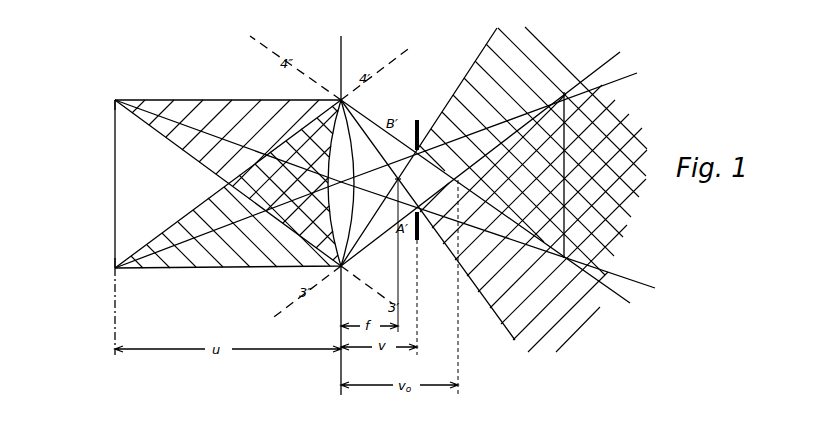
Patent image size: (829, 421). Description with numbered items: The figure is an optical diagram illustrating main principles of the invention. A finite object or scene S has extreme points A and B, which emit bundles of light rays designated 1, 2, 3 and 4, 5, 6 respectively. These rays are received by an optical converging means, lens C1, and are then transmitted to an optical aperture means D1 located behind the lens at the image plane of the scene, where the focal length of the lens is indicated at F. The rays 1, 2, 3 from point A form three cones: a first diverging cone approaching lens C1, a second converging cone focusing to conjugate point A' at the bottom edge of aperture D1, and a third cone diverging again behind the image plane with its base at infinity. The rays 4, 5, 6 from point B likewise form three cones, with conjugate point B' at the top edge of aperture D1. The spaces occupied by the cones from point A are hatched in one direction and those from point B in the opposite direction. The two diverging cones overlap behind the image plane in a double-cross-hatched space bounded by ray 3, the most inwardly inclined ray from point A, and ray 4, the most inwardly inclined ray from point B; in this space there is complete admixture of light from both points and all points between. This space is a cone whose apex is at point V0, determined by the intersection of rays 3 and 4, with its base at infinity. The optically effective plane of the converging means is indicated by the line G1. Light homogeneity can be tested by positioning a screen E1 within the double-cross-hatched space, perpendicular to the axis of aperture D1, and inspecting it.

The light ray 1 is at (318, 225).
The light ray 2 is at (390, 200).
The light ray 3 is at (370, 154).
The light ray 4 is at (376, 210).
The light ray 5 is at (381, 165).
The light ray 6 is at (310, 144).
The finite object or scene S is at (101, 184).
The extreme point A is at (103, 98).
The extreme point B is at (101, 271).
The lens C1 is at (347, 127).
The optical aperture means D1 is at (418, 120).
The screen E1 is at (564, 172).
The optically effective plane G1 is at (346, 50).
The focal length F is at (399, 179).
The apex point V0 is at (458, 180).